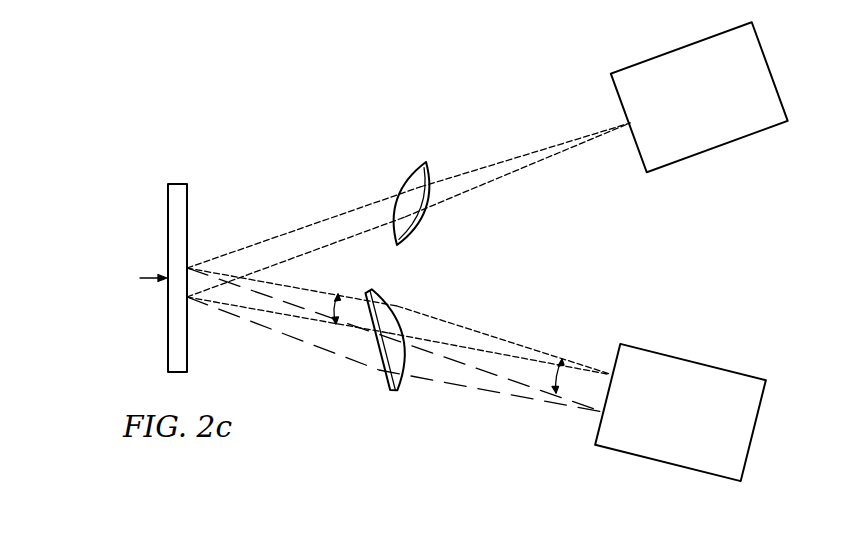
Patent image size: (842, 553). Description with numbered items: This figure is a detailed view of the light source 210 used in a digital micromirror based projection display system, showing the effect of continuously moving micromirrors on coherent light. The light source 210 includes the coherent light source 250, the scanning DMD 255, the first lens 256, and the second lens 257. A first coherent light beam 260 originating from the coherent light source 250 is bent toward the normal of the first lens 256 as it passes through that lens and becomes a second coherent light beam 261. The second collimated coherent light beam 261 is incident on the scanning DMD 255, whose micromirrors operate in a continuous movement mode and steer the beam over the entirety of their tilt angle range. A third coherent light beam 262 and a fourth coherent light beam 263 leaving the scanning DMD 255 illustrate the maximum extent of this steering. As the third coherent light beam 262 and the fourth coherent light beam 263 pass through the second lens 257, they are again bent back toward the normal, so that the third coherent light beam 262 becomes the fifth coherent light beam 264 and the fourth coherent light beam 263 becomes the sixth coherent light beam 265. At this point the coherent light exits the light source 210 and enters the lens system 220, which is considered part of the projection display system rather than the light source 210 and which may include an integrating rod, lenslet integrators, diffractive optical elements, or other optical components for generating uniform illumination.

The light source 210 is at (298, 96).
The lens system 220 is at (693, 360).
The coherent light source 250 is at (681, 45).
The scanning DMD 255 is at (178, 183).
The first lens 256 is at (397, 162).
The second lens 257 is at (380, 388).
The first coherent light beam 260 is at (520, 154).
The second coherent light beam 261 is at (296, 228).
The third coherent light beam 262 is at (353, 297).
The fourth coherent light beam 263 is at (300, 312).
The fifth coherent light beam 264 is at (452, 323).
The sixth coherent light beam 265 is at (487, 377).